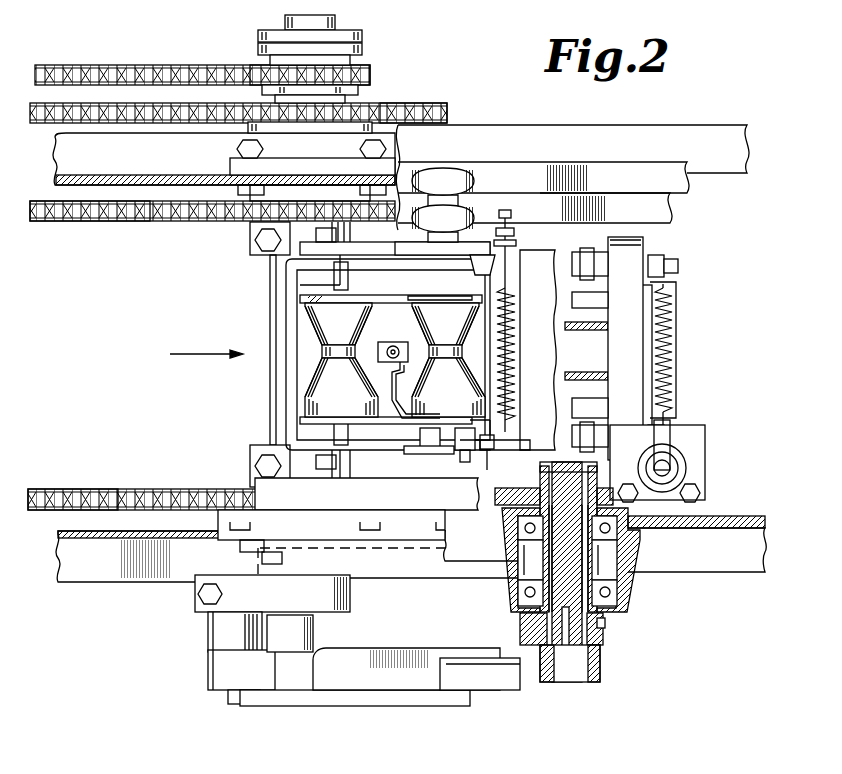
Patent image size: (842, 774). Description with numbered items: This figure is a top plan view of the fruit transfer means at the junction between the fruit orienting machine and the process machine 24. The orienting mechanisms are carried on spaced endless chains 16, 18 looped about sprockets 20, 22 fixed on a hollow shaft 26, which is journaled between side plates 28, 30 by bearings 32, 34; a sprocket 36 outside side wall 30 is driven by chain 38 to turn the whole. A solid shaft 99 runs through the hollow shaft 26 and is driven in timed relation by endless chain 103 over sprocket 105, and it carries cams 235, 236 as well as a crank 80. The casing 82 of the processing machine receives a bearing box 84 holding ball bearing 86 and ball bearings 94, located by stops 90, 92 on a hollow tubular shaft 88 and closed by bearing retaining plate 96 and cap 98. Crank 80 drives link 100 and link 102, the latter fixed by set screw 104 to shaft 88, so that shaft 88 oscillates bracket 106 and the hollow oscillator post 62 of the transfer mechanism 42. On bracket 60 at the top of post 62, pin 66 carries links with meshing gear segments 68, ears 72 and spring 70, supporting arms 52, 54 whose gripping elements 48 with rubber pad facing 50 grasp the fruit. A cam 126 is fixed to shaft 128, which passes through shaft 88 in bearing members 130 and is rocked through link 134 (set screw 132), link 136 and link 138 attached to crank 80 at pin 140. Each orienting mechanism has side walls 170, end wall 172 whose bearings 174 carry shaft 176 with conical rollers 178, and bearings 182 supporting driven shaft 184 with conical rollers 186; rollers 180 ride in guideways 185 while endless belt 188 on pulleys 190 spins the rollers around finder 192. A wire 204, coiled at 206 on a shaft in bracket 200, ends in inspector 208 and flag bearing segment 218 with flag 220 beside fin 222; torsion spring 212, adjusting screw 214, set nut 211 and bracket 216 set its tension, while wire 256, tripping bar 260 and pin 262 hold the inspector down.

The endless chain 16 is at (80, 487).
The endless chain 18 is at (92, 222).
The sprocket 20 is at (174, 487).
The sprocket 22 is at (175, 222).
The process machine 24 is at (602, 125).
The hollow shaft 26 is at (240, 148).
The side plate 28 is at (158, 531).
The side plate 30 is at (110, 175).
The bearing 32 is at (231, 547).
The bearing 34 is at (232, 164).
The sprocket 36 is at (441, 102).
The chain 38 is at (68, 123).
The fruit transfer mechanism 42 is at (682, 326).
The gripping elements 48 is at (606, 364).
The resilient rubber pad facing 50 is at (574, 375).
The arm 52 is at (566, 405).
The arm 54 is at (570, 268).
The bracket 60 is at (684, 461).
The hollow oscillator post 62 is at (702, 486).
The pin 66 is at (680, 266).
The integral gear segments 68 is at (674, 294).
The spring 70 is at (674, 365).
The ears 72 is at (665, 257).
The crank 80 is at (192, 602).
The casing 82 is at (742, 523).
The bearing box 84 is at (628, 600).
The ball bearing 86 is at (512, 599).
The hollow tubular shaft 88 is at (600, 559).
The stops 90 is at (520, 591).
The stops 92 is at (518, 560).
The ball bearings 94 is at (516, 547).
The bearing retaining plate 96 is at (660, 512).
The cap 98 is at (478, 497).
The solid rotatable shaft 99 is at (282, 24).
The link 100 is at (288, 641).
The link 102 is at (402, 651).
The endless chain 103 is at (163, 65).
The set screw 104 is at (605, 627).
The sprocket 105 is at (372, 76).
The bracket 106 is at (690, 464).
The cam 126 is at (556, 465).
The shaft 128 is at (568, 684).
The bearing members 130 is at (538, 488).
The set screw 132 is at (600, 676).
The link 134 is at (508, 667).
The link 136 is at (379, 707).
The link 138 is at (208, 681).
The pin 140 is at (238, 706).
The side walls 170 is at (364, 458).
The end wall 172 is at (288, 314).
The bearings 174 is at (350, 278).
The shaft 176 is at (344, 267).
The conical rollers 178 is at (306, 331).
The rollers 180 is at (432, 183).
The bearings 182 is at (450, 455).
The driven shaft 184 is at (466, 197).
The guideways 185 is at (664, 207).
The conical rollers 186 is at (425, 312).
The endless belt 188 is at (392, 300).
The pulleys 190 is at (288, 303).
The finder 192 is at (404, 350).
The bracket 200 is at (506, 281).
The wire 204 is at (395, 415).
The coil 206 is at (500, 418).
The inspector 208 is at (422, 353).
The set nut 211 is at (514, 232).
The torsion spring 212 is at (516, 360).
The adjusting screw 214 is at (506, 219).
The bracket 216 is at (516, 244).
The flag bearing segment 218 is at (422, 377).
The flag 220 is at (372, 380).
The fin 222 is at (386, 342).
The cam 235 is at (360, 52).
The cam 236 is at (360, 33).
The wire 256 is at (493, 452).
The tripping bar 260 is at (550, 429).
The pin 262 is at (470, 462).